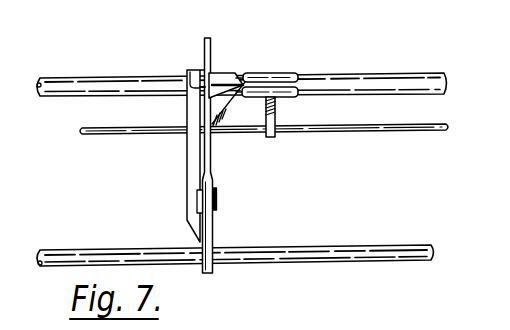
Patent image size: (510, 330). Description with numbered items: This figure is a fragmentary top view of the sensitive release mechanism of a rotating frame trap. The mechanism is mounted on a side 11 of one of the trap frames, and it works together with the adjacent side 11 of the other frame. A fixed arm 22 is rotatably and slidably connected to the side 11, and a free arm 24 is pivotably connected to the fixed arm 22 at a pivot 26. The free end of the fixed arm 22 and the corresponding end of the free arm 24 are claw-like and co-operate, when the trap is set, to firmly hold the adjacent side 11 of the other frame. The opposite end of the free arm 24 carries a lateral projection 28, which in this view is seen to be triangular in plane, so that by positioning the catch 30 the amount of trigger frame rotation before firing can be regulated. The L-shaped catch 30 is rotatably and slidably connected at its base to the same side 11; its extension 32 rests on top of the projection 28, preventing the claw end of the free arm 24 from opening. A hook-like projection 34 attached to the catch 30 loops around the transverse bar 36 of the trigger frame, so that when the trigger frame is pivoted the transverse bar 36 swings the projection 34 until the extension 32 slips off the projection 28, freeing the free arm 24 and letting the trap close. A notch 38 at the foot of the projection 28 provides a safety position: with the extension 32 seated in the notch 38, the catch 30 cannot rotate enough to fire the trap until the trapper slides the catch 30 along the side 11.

The side 11 is at (60, 92).
The fixed arm 22 is at (187, 114).
The free arm 24 is at (213, 175).
The pivot 26 is at (217, 206).
The lateral projection 28 is at (213, 80).
The L-shaped catch 30 is at (283, 72).
The extension 32 is at (232, 73).
The hook-like projection 34 is at (276, 113).
The transverse bar 36 is at (387, 131).
The notch 38 is at (188, 71).